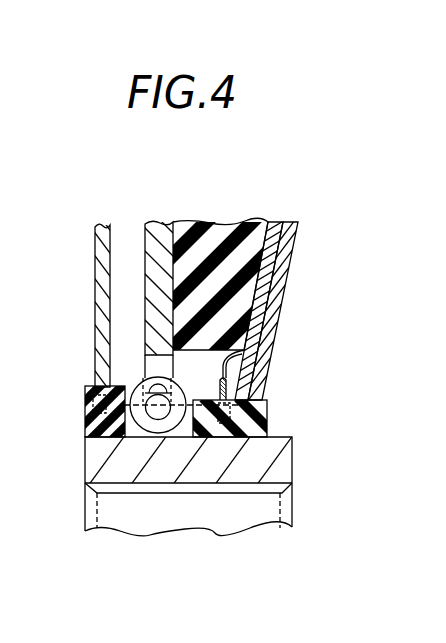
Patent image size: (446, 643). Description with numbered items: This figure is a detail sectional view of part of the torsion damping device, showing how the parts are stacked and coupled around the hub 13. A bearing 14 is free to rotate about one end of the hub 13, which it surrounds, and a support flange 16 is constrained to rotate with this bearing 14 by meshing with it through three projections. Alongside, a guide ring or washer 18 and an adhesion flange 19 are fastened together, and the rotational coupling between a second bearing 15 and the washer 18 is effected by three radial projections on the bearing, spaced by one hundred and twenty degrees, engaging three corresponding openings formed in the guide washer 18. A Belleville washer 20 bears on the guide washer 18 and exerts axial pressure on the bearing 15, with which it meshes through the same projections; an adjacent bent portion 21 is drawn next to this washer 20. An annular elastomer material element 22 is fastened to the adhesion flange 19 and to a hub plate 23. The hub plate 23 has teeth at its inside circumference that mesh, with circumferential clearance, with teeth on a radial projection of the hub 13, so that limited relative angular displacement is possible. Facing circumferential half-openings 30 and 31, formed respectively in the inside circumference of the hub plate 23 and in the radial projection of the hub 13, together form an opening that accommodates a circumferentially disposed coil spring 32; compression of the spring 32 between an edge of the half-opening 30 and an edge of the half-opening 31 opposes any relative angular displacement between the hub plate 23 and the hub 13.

The hub 13 is at (295, 470).
The bearing 14 is at (84, 432).
The bearing 15 is at (272, 431).
The support flange 16 is at (100, 221).
The guide ring or washer 18 is at (297, 220).
The adhesion flange 19 is at (275, 219).
The Belleville washer 20 is at (229, 393).
The bent portion 21 is at (246, 372).
The annular elastomer material element 22 is at (221, 220).
The hub plate 23 is at (158, 220).
The half-opening 30 is at (150, 362).
The half-opening 31 is at (176, 439).
The coil spring 32 is at (191, 386).